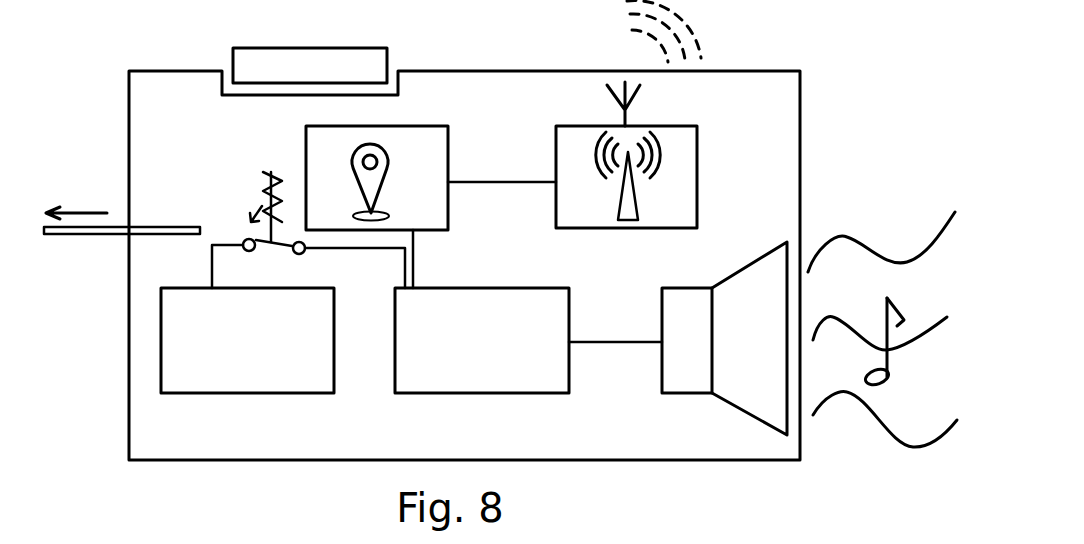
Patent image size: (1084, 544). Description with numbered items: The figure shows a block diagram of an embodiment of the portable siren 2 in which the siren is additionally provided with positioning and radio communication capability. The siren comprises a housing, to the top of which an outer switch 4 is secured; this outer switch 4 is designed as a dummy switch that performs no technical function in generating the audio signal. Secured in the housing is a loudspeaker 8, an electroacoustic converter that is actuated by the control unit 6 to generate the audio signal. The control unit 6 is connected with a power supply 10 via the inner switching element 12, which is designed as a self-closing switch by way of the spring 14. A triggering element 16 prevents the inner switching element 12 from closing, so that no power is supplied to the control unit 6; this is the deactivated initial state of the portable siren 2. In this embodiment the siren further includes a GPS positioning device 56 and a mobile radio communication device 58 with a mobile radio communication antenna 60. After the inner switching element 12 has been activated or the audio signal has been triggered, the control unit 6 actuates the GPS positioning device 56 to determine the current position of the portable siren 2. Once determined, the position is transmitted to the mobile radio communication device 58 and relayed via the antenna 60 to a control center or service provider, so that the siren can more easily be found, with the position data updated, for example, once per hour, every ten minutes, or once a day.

The portable siren 2 is at (518, 53).
The outer switch 4 is at (310, 65).
The control unit 6 is at (483, 311).
The loudspeaker 8 is at (724, 338).
The power supply 10 is at (247, 319).
The inner switching element 12 is at (258, 192).
The spring 14 is at (236, 212).
The triggering element 16 is at (118, 242).
The GPS positioning device 56 is at (438, 167).
The mobile radio communication device 58 is at (688, 167).
The mobile radio communication antenna 60 is at (634, 110).